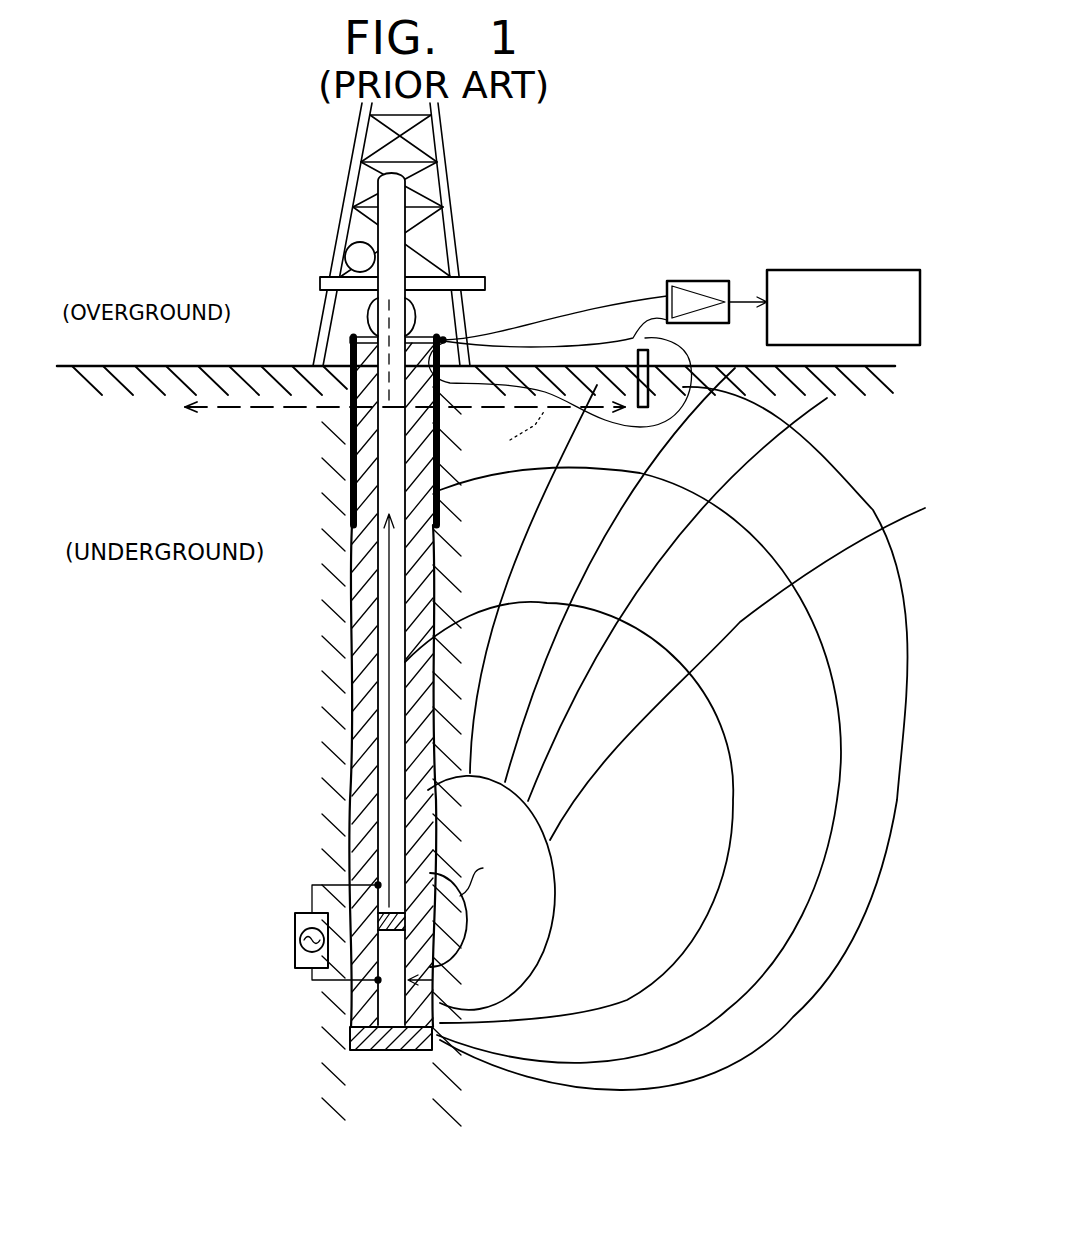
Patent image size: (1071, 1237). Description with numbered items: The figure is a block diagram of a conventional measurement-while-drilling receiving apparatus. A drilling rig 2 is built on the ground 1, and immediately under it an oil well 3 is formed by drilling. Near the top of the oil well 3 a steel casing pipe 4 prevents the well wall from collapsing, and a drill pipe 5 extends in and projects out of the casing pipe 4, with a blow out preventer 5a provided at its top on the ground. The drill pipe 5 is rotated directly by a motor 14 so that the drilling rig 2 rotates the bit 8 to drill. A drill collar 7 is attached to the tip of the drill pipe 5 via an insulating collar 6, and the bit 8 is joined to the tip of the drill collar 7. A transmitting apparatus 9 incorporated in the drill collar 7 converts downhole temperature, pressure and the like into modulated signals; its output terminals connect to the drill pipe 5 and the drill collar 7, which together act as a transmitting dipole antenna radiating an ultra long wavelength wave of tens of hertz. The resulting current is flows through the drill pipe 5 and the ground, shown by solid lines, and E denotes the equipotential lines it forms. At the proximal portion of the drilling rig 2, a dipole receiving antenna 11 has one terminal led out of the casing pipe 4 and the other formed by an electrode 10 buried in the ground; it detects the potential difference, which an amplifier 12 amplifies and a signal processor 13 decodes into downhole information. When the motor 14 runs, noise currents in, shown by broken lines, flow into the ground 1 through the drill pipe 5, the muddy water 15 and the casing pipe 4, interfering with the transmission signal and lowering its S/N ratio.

The ground 1 is at (290, 364).
The drilling rig 2 is at (484, 277).
The oil well 3 is at (356, 672).
The casing pipe 4 is at (348, 470).
The drill pipe 5 is at (341, 543).
The blow out preventer 5a is at (420, 316).
The insulating collar 6 is at (407, 922).
The drill collar 7 is at (388, 1003).
The bit 8 is at (388, 1052).
The transmitting apparatus 9 is at (295, 946).
The electrode 10 is at (687, 408).
The receiving antenna 11 is at (577, 352).
The amplifier 12 is at (705, 280).
The signal processor 13 is at (848, 270).
The motor 14 is at (346, 254).
The muddy water 15 is at (358, 597).
The equipotential lines E is at (525, 538).
The current is is at (390, 495).
The noise current in is at (405, 431).